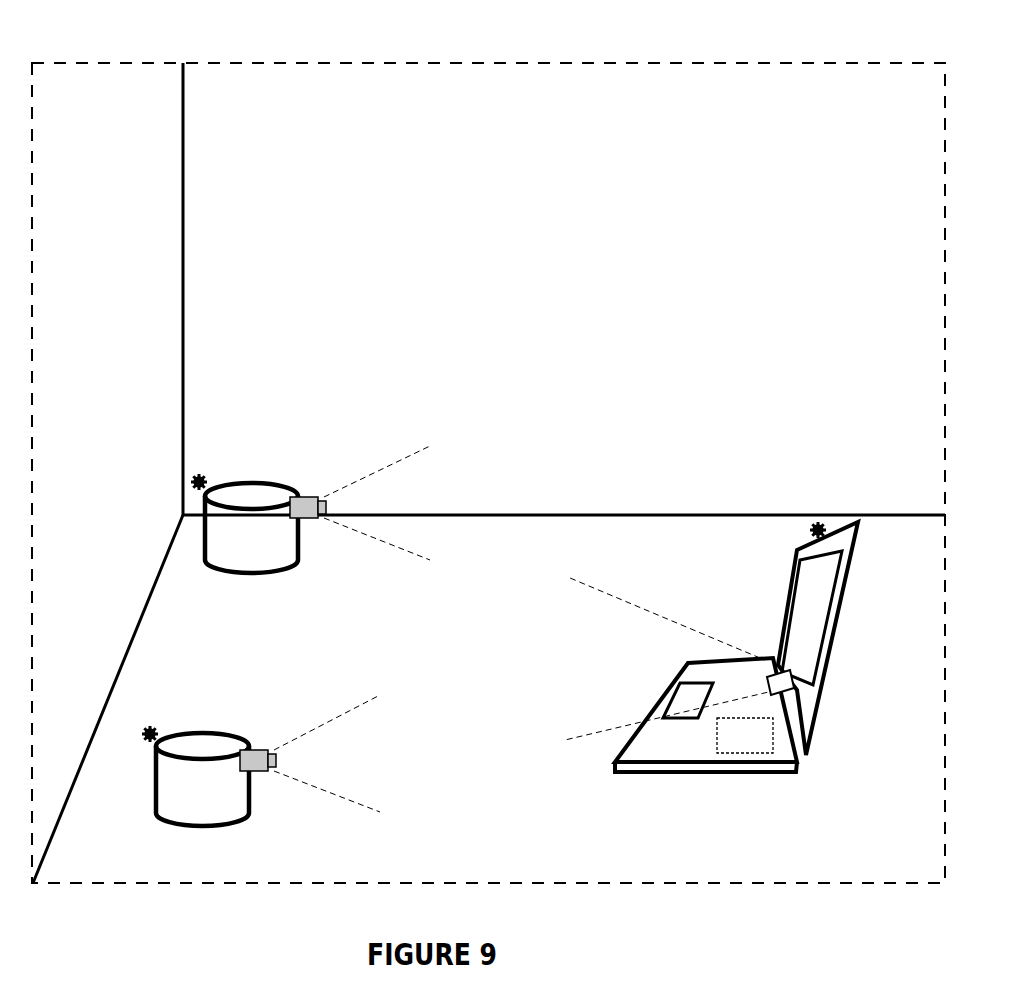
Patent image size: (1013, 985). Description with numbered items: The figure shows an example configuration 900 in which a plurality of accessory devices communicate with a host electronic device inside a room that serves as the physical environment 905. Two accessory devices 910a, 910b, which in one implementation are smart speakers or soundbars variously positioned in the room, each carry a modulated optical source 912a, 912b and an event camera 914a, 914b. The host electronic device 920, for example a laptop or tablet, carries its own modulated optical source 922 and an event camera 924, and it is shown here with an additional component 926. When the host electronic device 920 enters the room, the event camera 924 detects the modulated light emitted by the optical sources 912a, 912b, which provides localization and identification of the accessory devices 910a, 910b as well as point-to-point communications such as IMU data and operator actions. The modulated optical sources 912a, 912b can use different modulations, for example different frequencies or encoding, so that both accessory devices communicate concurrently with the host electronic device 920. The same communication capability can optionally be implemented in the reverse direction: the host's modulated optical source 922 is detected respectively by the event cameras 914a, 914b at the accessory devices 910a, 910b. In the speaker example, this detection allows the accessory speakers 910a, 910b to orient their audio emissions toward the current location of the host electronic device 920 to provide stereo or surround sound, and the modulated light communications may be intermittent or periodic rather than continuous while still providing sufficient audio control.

The environment / system 900 is at (180, 40).
The physical environment 905 is at (131, 131).
The accessory device 910a is at (179, 736).
The accessory device 910b is at (229, 482).
The modulated optical source 912a is at (149, 729).
The modulated optical source 912b is at (198, 476).
The event camera 914a is at (255, 748).
The event camera 914b is at (304, 497).
The host electronic device 920 is at (851, 519).
The modulated optical source 922 is at (818, 523).
The event camera 924 is at (795, 680).
The processor / label 926 is at (760, 743).